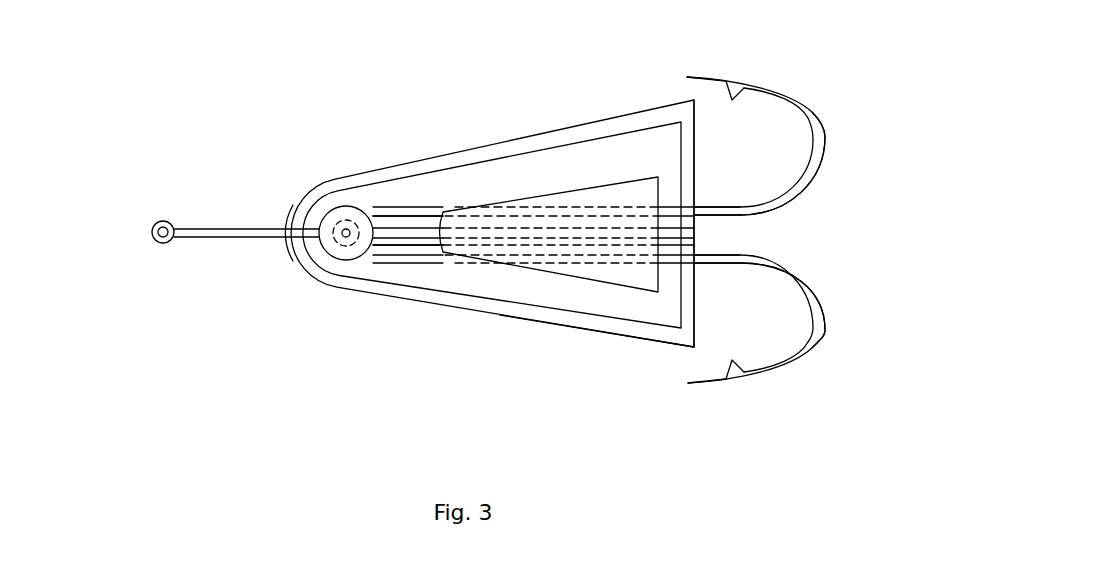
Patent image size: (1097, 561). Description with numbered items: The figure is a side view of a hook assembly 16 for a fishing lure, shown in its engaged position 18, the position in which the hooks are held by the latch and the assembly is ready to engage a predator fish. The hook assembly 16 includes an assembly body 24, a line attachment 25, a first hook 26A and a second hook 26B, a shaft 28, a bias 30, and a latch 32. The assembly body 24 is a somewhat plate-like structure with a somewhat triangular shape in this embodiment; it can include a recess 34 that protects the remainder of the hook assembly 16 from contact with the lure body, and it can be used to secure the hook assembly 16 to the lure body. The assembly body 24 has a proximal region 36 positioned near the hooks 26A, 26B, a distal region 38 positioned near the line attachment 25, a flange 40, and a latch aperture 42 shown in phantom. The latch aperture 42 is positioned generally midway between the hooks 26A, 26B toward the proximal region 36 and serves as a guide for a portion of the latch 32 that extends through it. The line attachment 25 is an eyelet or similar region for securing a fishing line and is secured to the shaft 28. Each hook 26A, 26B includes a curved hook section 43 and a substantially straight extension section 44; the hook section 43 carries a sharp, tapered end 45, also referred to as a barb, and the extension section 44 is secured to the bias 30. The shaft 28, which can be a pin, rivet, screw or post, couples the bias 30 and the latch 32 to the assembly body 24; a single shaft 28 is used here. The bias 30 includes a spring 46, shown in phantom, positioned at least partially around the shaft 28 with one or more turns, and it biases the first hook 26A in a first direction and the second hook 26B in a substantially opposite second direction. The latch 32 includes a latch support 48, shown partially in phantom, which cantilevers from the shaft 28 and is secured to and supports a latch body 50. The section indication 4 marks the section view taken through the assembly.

The section line 4- 4 is at (92, 233).
The hook assembly 16 is at (460, 110).
The engaged position 18 is at (796, 226).
The assembly body 24 is at (576, 130).
The line attachment 25 is at (175, 250).
The first hook 26A is at (808, 86).
The second hook 26B is at (800, 375).
The shaft 28 is at (345, 258).
The bias 30 is at (352, 197).
The latch 32 is at (478, 362).
The recess 34 is at (533, 173).
The proximal region 36 is at (674, 95).
The distal region 38 is at (294, 197).
The flange 40 is at (535, 312).
The latch aperture 42 is at (628, 242).
The hook section 43 is at (822, 182).
The extension section 44 is at (722, 205).
The tapered end 45 is at (688, 75).
The spring 46 is at (340, 237).
The latch support 48 is at (416, 232).
The latch body 50 is at (478, 235).